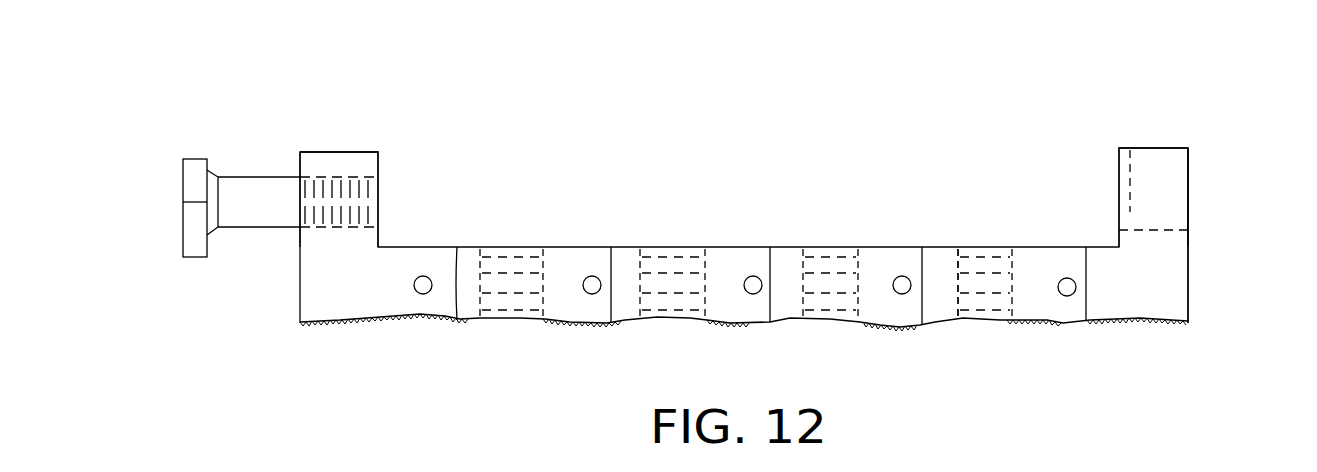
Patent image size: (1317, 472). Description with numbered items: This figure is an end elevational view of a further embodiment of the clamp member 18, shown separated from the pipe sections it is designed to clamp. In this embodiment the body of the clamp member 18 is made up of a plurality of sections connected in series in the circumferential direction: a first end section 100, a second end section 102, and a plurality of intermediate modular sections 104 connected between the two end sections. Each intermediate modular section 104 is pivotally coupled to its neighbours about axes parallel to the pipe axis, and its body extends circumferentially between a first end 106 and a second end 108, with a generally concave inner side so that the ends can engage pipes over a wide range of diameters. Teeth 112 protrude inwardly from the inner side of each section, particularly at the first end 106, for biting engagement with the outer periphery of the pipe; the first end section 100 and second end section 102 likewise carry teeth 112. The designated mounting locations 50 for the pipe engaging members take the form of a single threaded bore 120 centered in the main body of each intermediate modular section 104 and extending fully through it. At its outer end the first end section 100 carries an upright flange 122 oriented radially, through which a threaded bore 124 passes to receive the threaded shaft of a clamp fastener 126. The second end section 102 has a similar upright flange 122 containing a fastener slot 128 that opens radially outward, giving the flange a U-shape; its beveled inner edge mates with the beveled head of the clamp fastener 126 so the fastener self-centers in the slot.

The clamp member 18 is at (771, 75).
The designated mounting locations 50 is at (516, 245).
The first end section 100 is at (355, 150).
The second end section 102 is at (1162, 130).
The intermediate modular sections 104 is at (577, 313).
The first end 106 is at (457, 245).
The second end 108 is at (594, 245).
The teeth 112 is at (400, 320).
The threaded bore 120 is at (985, 310).
The upright flange 122 is at (1188, 183).
The threaded bore 124 is at (330, 225).
The clamp fastener 126 is at (268, 210).
The fastener slot 128 is at (1157, 232).